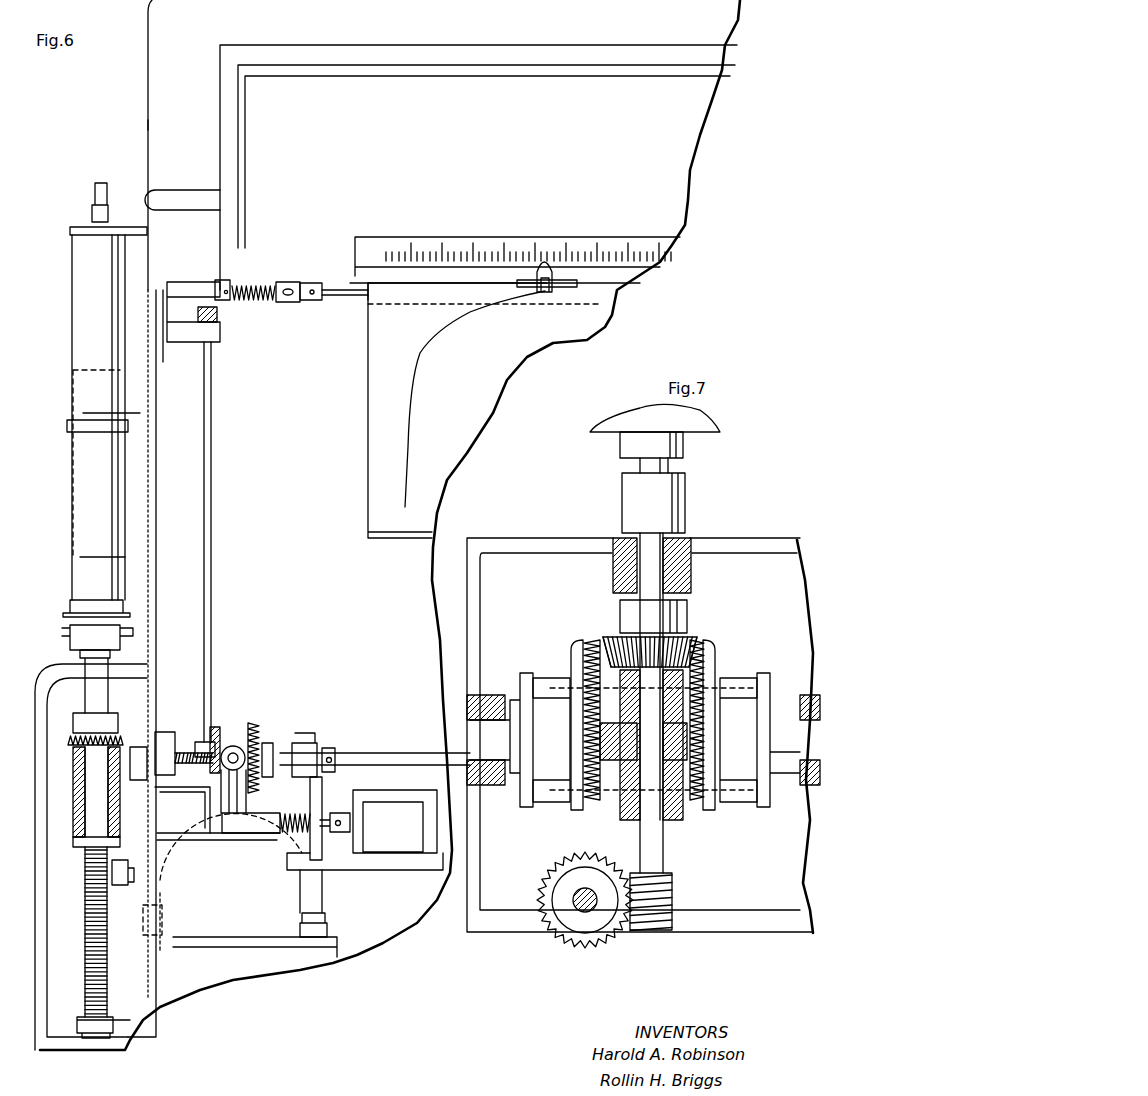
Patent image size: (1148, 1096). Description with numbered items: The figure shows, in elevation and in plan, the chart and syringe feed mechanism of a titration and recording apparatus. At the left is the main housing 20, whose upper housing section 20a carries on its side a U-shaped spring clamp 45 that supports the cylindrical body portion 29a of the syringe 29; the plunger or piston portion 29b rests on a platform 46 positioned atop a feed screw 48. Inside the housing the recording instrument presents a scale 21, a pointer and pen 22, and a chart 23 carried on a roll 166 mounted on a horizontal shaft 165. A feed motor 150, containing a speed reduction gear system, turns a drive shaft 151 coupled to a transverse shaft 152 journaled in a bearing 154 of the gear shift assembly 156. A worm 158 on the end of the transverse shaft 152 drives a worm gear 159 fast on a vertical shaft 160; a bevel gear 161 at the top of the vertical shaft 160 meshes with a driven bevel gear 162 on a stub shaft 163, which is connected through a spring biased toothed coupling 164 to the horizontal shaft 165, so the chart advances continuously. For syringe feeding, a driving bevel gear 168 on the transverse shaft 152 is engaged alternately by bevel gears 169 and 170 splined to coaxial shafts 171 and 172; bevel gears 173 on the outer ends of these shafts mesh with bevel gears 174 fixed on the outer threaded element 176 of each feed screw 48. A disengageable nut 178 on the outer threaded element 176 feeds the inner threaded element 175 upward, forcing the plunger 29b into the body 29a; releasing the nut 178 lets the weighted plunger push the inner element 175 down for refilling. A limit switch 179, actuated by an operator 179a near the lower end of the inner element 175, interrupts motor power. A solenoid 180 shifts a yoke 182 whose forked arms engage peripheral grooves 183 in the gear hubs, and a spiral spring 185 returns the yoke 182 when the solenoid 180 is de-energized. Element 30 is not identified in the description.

In FIG. 6, the main housing 20 is at (140, 103).
In FIG. 6, the upper housing section 20a is at (153, 125).
In FIG. 6, the scale 21 is at (508, 248).
In FIG. 6, the pointer and pen 22 is at (556, 292).
In FIG. 6, the chart 23 is at (368, 415).
In FIG. 6, the syringe 29 is at (66, 249).
In FIG. 6, the cylindrical body portion 29a is at (75, 299).
In FIG. 6, the plunger or piston portion 29b is at (80, 484).
In FIG. 6, the stem 30 is at (95, 196).
In FIG. 6, the U-shaped spring clamp 45 is at (133, 228).
In FIG. 6, the platform 46 is at (70, 607).
In FIG. 6, the feed screw 48 is at (80, 656).
In FIG. 6, the feed motor 150 is at (295, 899).
In FIG. 7, the feed motor 150 is at (708, 421).
In FIG. 7, the drive shaft 151 is at (640, 466).
In FIG. 7, the transverse shaft 152 is at (645, 567).
In FIG. 7, the bearing 154 is at (678, 581).
In FIG. 6, the gear shift assembly 156 is at (293, 723).
In FIG. 7, the gear shift assembly 156 is at (734, 651).
In FIG. 7, the worm 158 is at (673, 891).
In FIG. 6, the worm gear 159 is at (210, 771).
In FIG. 7, the worm gear 159 is at (585, 913).
In FIG. 6, the vertical shaft 160 is at (218, 423).
In FIG. 7, the vertical shaft 160 is at (590, 893).
In FIG. 6, the bevel gear 161 is at (213, 319).
In FIG. 6, the driven bevel gear 162 is at (220, 282).
In FIG. 6, the stub shaft 163 is at (258, 301).
In FIG. 6, the spring biased toothed coupling 164 is at (296, 303).
In FIG. 6, the horizontal shaft 165 is at (340, 296).
In FIG. 7, the horizontal shaft 165 is at (672, 833).
In FIG. 6, the roll 166 is at (392, 303).
In FIG. 7, the bevel gear 168 is at (688, 638).
In FIG. 6, the bevel gear 169 is at (253, 723).
In FIG. 7, the bevel gear 169 is at (712, 665).
In FIG. 6, the bevel gear 170 is at (218, 742).
In FIG. 7, the bevel gear 170 is at (580, 649).
In FIG. 6, the shaft 171 is at (370, 757).
In FIG. 7, the shaft 171 is at (790, 766).
In FIG. 6, the shaft 172 is at (178, 742).
In FIG. 7, the shaft 172 is at (493, 762).
In FIG. 6, the bevel gear 173 is at (134, 746).
In FIG. 6, the bevel gear 174 is at (78, 760).
In FIG. 6, the inner threaded element 175 is at (92, 910).
In FIG. 6, the outer threaded element 176 is at (80, 791).
In FIG. 6, the disengageable nut 178 is at (68, 633).
In FIG. 6, the limit switch 179 is at (118, 884).
In FIG. 6, the operator 179a is at (123, 1017).
In FIG. 6, the solenoid 180 is at (396, 803).
In FIG. 6, the yoke 182 is at (233, 748).
In FIG. 7, the yoke 182 is at (515, 801).
In FIG. 7, the peripheral grooves 183 is at (530, 739).
In FIG. 6, the spiral spring 185 is at (293, 815).